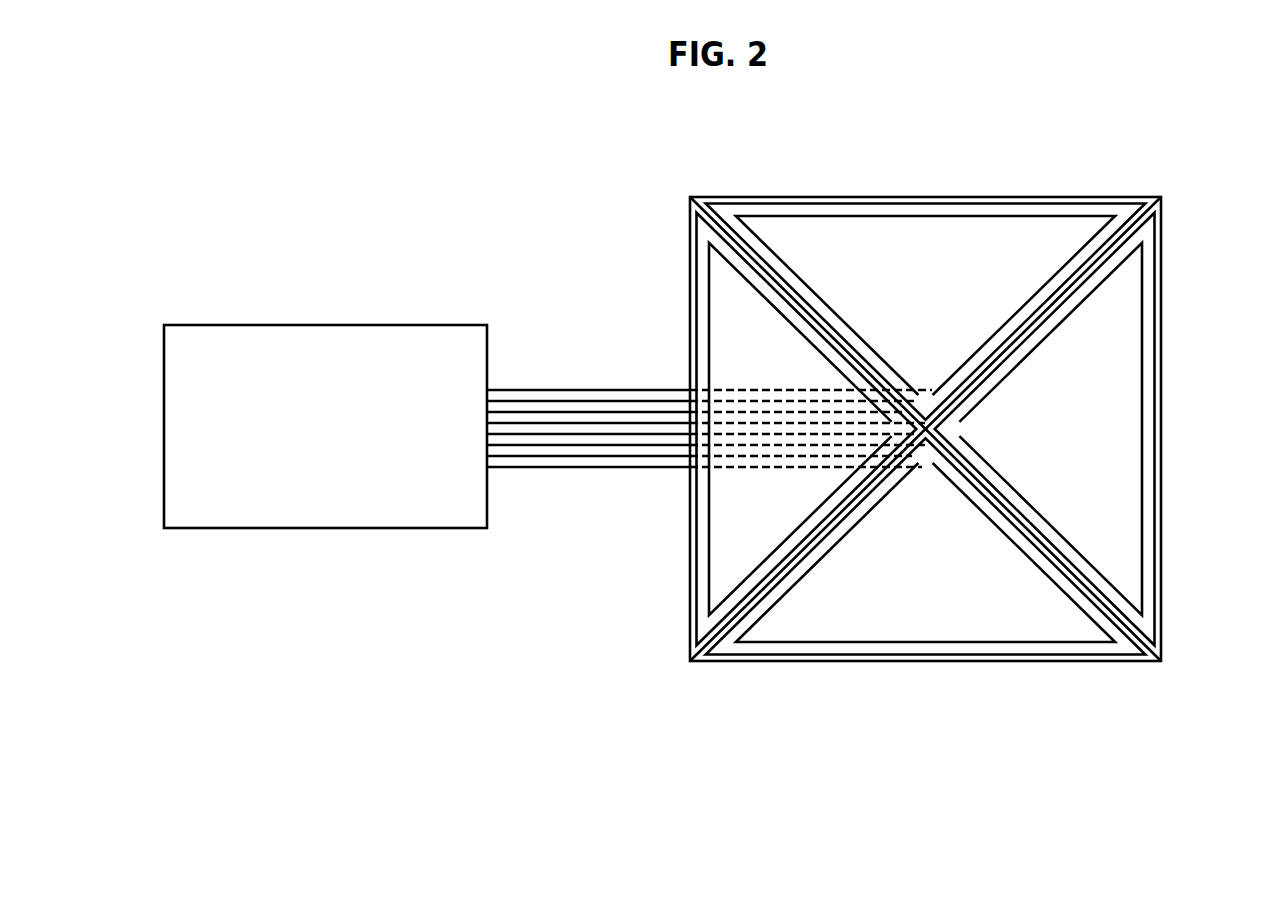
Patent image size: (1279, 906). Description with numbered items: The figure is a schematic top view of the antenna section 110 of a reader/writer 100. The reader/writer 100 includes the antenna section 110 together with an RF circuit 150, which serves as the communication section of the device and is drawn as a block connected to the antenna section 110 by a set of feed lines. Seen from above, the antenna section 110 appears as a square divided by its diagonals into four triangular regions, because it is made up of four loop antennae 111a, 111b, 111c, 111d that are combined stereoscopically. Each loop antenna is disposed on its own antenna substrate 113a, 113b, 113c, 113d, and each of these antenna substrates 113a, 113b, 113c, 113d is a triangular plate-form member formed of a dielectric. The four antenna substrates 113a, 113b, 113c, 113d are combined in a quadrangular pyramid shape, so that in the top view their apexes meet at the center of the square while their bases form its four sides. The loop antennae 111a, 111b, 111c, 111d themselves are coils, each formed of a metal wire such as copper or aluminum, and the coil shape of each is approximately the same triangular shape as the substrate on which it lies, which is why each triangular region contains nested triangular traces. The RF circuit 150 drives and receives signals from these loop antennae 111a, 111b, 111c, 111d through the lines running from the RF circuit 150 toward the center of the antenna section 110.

The reader/writer 100 is at (478, 677).
The antenna section 110 is at (1118, 692).
The loop antenna 111a is at (923, 197).
The loop antenna 111b is at (1161, 371).
The loop antenna 111c is at (1018, 662).
The loop antenna 111d is at (690, 348).
The antenna substrate 113a is at (1010, 197).
The antenna substrate 113b is at (1161, 430).
The antenna substrate 113c is at (928, 662).
The antenna substrate 113d is at (690, 290).
The RF circuit 150 is at (322, 324).